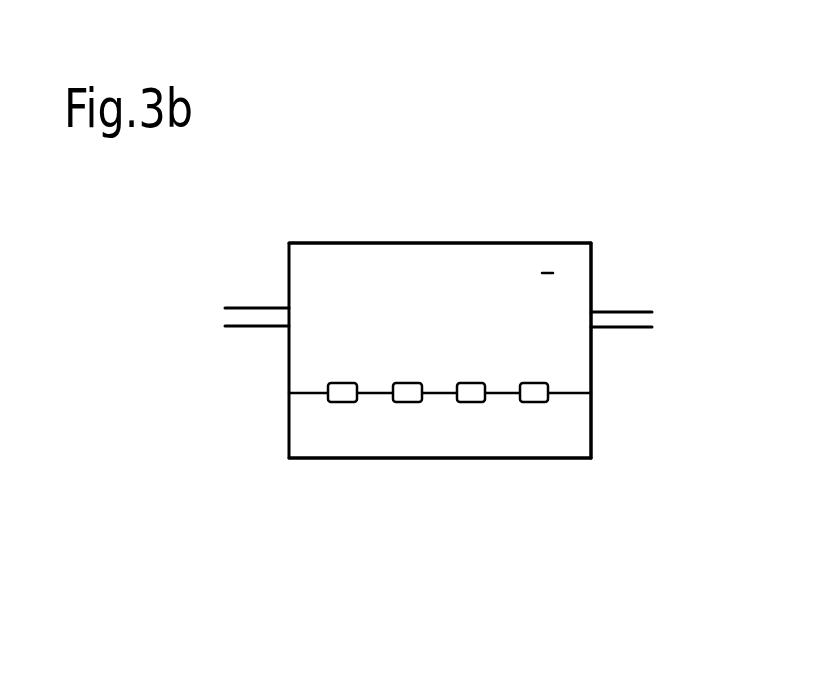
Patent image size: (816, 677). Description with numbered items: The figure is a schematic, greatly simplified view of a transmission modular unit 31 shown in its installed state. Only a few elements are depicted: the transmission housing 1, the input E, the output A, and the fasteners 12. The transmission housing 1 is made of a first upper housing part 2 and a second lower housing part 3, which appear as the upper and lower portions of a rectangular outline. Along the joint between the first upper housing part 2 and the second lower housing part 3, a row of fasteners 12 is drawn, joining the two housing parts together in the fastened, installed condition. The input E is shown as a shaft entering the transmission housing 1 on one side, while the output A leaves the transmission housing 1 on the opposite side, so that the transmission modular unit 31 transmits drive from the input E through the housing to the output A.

The transmission housing 1 is at (403, 190).
The first upper housing part 2 is at (543, 250).
The second lower housing part 3 is at (472, 440).
The fasteners 12 is at (550, 399).
The transmission modular unit 31 is at (508, 147).
The input E is at (252, 308).
The output A is at (625, 308).